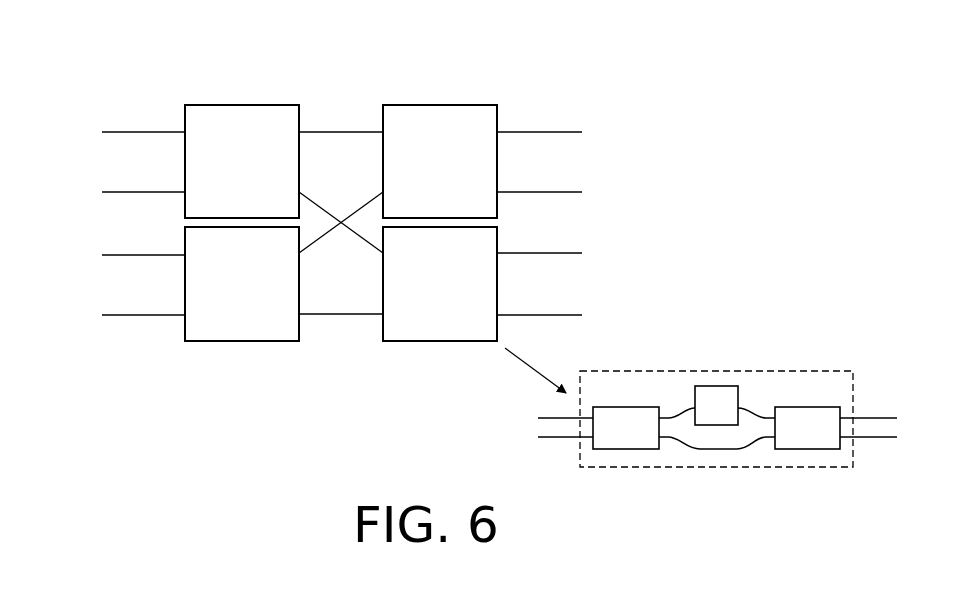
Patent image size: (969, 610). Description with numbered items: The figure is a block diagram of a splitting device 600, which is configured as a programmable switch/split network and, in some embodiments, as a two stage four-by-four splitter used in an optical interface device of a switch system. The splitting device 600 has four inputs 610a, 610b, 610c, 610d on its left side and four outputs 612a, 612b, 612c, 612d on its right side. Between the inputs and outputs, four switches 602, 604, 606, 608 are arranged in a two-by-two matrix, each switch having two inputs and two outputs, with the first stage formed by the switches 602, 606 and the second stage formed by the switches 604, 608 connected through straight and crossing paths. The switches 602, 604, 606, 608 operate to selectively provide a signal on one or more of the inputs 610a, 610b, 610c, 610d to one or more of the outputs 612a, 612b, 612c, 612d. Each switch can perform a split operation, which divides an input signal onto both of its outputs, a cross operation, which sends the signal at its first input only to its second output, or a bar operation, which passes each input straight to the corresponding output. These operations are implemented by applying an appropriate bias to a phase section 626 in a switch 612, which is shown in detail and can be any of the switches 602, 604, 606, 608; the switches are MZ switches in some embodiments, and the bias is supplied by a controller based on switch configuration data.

The splitting device 600 is at (116, 40).
The switch 602 is at (230, 105).
The switch 604 is at (445, 105).
The switch 606 is at (230, 341).
The switch 608 is at (445, 341).
The input 610a is at (168, 130).
The input 610b is at (168, 190).
The input 610c is at (168, 252).
The input 610d is at (168, 312).
The output 612a is at (513, 130).
The output 612b is at (513, 190).
The output 612c is at (513, 251).
The output 612d is at (513, 312).
The switch 612 is at (717, 396).
The phase section 626 is at (716, 386).